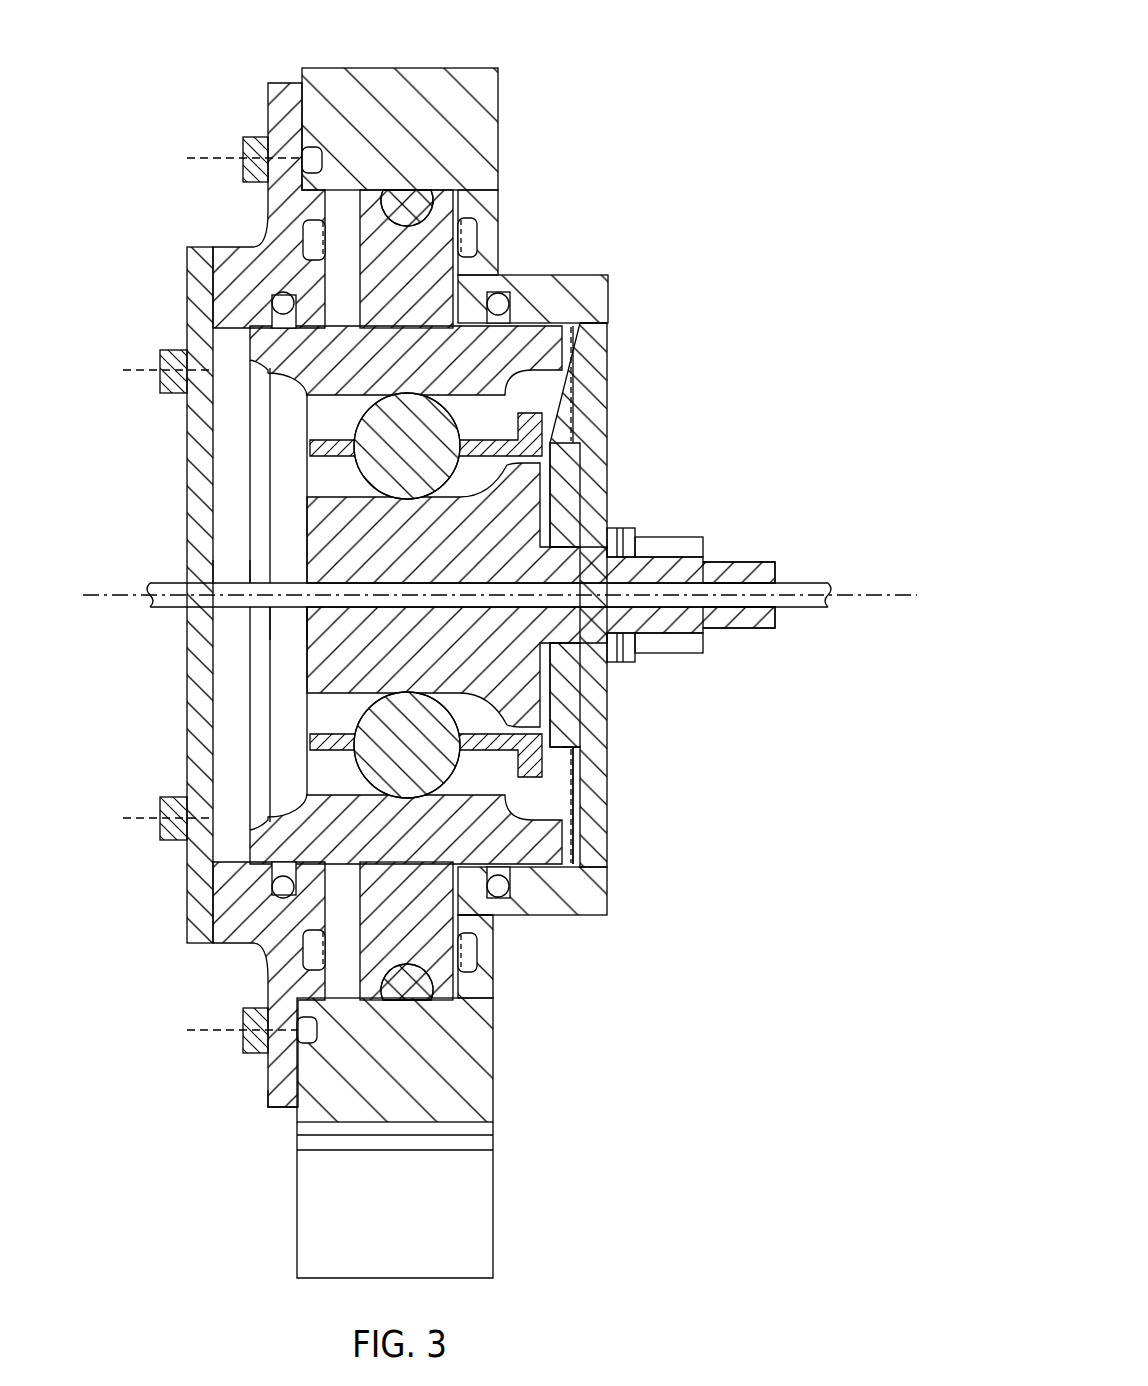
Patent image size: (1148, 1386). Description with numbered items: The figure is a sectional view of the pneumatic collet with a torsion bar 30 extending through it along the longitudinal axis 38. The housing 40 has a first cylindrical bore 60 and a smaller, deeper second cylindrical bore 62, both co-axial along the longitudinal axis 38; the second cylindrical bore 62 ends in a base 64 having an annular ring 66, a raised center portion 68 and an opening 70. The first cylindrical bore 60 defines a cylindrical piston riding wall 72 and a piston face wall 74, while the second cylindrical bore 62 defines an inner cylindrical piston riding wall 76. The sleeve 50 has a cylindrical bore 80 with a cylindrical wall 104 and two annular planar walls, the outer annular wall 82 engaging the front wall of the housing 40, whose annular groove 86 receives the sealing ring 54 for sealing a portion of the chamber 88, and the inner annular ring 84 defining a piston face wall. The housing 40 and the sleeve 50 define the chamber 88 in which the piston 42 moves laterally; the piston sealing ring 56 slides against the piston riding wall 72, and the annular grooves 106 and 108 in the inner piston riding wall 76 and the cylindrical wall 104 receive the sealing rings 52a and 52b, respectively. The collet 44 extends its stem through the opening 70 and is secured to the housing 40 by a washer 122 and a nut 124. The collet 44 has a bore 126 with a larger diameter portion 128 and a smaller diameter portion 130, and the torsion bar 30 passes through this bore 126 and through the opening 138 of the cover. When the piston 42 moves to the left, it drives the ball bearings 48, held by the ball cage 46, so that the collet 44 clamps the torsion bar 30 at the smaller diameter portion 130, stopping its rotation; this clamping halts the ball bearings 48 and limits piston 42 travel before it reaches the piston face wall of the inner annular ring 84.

The torsion bar 30 is at (807, 585).
The longitudinal axis 38 is at (877, 594).
The housing 40 is at (472, 133).
The piston 42 is at (470, 990).
The collet 44 is at (330, 665).
The ball cage 46 is at (556, 748).
The ball bearings 48 is at (530, 758).
The sleeve 50 is at (227, 935).
The sealing ring 52a is at (497, 283).
The sealing ring 52b is at (260, 290).
The sealing ring 54 is at (322, 143).
The piston sealing ring 56 is at (422, 203).
The first cylindrical bore 60 is at (330, 208).
The second cylindrical bore 62 is at (537, 807).
The base 64 is at (525, 505).
The annular ring 66 is at (588, 392).
The raised center portion 68 is at (583, 717).
The opening 70 is at (623, 527).
The cylindrical piston riding wall 72 is at (350, 185).
The piston face wall 74 is at (505, 925).
The inner cylindrical piston riding wall 76 is at (607, 330).
The cylindrical bore 80 is at (228, 455).
The outer annular wall 82 is at (275, 1100).
The inner annular ring 84 is at (305, 982).
The annular groove 86 is at (302, 1032).
The chamber 88 is at (187, 735).
The cylindrical wall 104 is at (227, 332).
The annular groove 106 is at (510, 887).
The annular groove 108 is at (287, 890).
The washer 122 is at (675, 536).
The nut 124 is at (710, 560).
The bore 126 is at (760, 613).
The larger diameter portion 128 is at (760, 575).
The smaller diameter portion 130 is at (305, 630).
The opening 138 is at (190, 578).